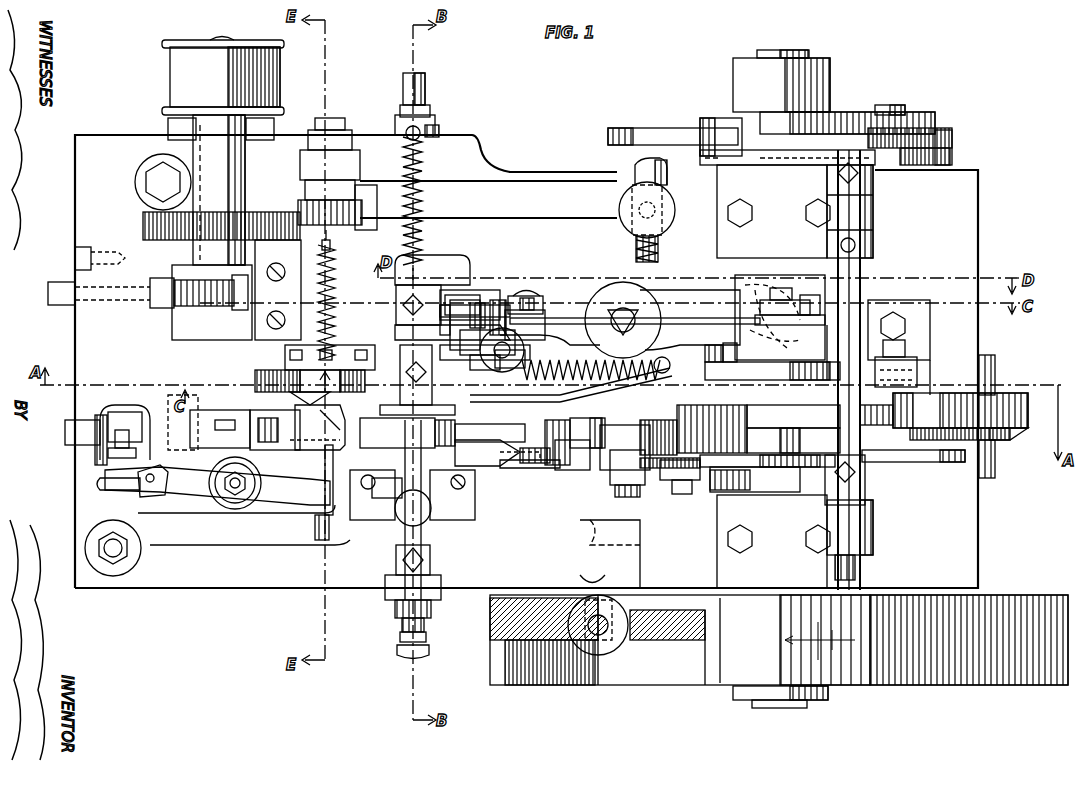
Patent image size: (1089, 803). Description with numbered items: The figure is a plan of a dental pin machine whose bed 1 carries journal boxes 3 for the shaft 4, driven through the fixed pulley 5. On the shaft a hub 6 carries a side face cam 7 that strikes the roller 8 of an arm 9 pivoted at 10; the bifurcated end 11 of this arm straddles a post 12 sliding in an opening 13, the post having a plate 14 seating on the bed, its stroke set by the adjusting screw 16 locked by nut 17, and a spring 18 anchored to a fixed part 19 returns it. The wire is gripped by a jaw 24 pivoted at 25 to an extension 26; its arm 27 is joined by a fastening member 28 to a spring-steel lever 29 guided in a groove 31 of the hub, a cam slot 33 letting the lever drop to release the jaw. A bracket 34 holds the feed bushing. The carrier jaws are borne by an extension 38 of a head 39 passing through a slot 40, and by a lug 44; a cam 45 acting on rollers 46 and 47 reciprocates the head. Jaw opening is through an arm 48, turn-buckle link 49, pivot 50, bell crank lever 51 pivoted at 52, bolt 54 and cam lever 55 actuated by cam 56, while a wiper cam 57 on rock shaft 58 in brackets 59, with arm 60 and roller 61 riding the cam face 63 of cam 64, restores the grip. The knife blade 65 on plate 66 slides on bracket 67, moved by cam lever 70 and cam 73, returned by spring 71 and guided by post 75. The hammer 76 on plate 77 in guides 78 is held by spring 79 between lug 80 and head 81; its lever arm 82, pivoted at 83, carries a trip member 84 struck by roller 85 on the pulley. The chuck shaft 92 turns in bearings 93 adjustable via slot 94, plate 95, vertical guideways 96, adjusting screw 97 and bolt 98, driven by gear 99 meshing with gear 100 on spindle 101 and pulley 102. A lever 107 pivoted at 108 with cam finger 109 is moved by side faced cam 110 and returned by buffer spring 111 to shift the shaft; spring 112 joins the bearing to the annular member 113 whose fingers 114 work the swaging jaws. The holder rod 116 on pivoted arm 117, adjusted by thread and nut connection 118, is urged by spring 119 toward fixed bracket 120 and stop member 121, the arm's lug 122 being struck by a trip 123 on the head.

The bed 1 is at (288, 132).
The journal boxes 3 is at (773, 376).
The shaft 4 is at (768, 57).
The fixed pulley 5 is at (779, 640).
The hub 6 is at (740, 283).
The side face cam 7 is at (715, 345).
The roller 8 is at (772, 285).
The arm 9 is at (690, 320).
The pivot 10 is at (618, 308).
The bifurcated end 11 is at (422, 305).
The post 12 is at (455, 300).
The opening 13 is at (487, 350).
The plate 14 is at (420, 268).
The adjusting screw 16 is at (425, 100).
The nut 17 is at (430, 118).
The spring 18 is at (425, 155).
The fixed part 19 is at (400, 125).
The gripping jaw 24 is at (330, 354).
The pivot 25 is at (475, 305).
The extension 26 is at (498, 300).
The arm 27 is at (515, 312).
The fastening member 28 is at (520, 310).
The lever 29 is at (628, 308).
The groove 31 is at (825, 318).
The cam slot 33 is at (820, 300).
The bracket 34 is at (338, 381).
The extension 38 is at (475, 445).
The head 39 is at (505, 468).
The slot 40 is at (205, 420).
The lug 44 is at (376, 495).
The cam 45 is at (793, 440).
The roller 46 is at (944, 416).
The roller 47 is at (673, 437).
The arm 48 is at (225, 434).
The turn-buckle link 49 is at (442, 433).
The pivot 50 is at (570, 408).
The bell crank lever 51 is at (592, 450).
The pivot 52 is at (565, 465).
The bolt 54 is at (640, 488).
The cam lever 55 is at (682, 486).
The cam 56 is at (782, 480).
The wiper cam 57 is at (915, 462).
The rock shaft 58 is at (840, 413).
The brackets 59 is at (878, 535).
The arm 60 is at (790, 160).
The roller 61 is at (721, 137).
The cam face 63 is at (673, 137).
The cam 64 is at (922, 128).
The knife blade 65 is at (417, 380).
The plate 66 is at (475, 455).
The bracket 67 is at (570, 361).
The cam lever 70 is at (664, 372).
The spring 71 is at (608, 362).
The cam 73 is at (768, 365).
The post 75 is at (918, 370).
The hammer 76 is at (400, 516).
The plate 77 is at (395, 582).
The guides 78 is at (452, 495).
The spring 79 is at (400, 636).
The lug 80 is at (402, 612).
The head 81 is at (400, 652).
The lever arm 82 is at (244, 525).
The pivot 83 is at (130, 556).
The trip member 84 is at (610, 554).
The roller 85 is at (598, 625).
The shaft 92 is at (305, 180).
The bearings 93 is at (315, 302).
The slot 94 is at (165, 305).
The plate 95 is at (212, 302).
The vertical guideways 96 is at (278, 290).
The adjusting screw 97 is at (170, 270).
The bolt 98 is at (230, 298).
The gear 99 is at (372, 220).
The gear 100 is at (150, 215).
The spindle 101 is at (219, 190).
The pulley 102 is at (223, 89).
The lever 107 is at (488, 199).
The pivot 108 is at (150, 170).
The cam finger 109 is at (635, 165).
The side faced cam 110 is at (948, 155).
The buffer spring 111 is at (636, 243).
The spring 112 is at (325, 265).
The annular member 113 is at (270, 372).
The fingers 114 is at (290, 398).
The holder rod 116 is at (330, 455).
The pivoted arm 117 is at (217, 483).
The thread and nut connection 118 is at (315, 527).
The spring 119 is at (97, 452).
The fixed bracket 120 is at (122, 420).
The stop member 121 is at (120, 484).
The lug 122 is at (148, 483).
The trip 123 is at (250, 448).